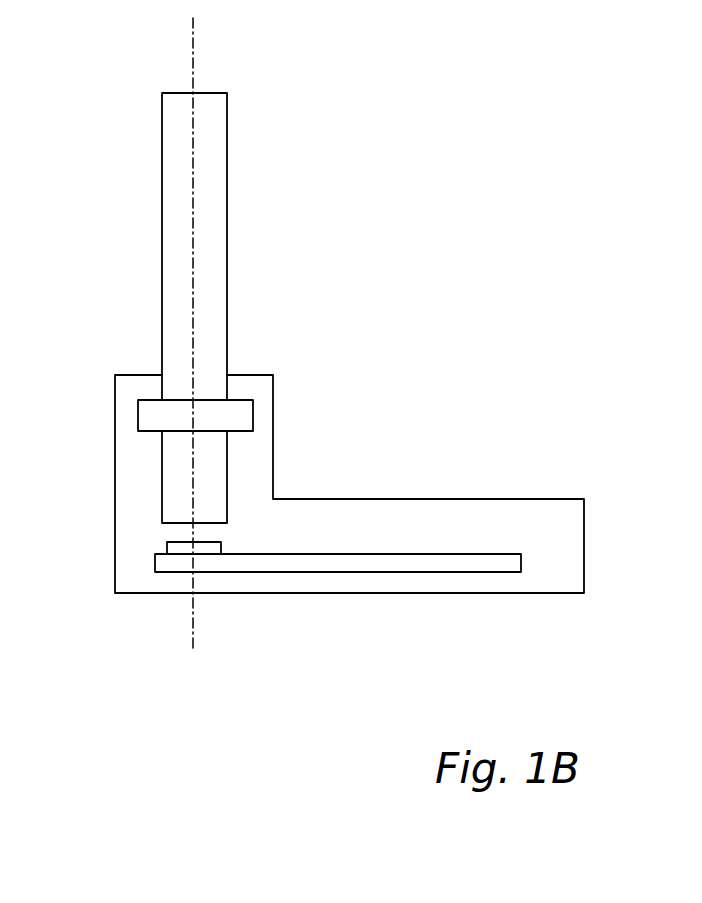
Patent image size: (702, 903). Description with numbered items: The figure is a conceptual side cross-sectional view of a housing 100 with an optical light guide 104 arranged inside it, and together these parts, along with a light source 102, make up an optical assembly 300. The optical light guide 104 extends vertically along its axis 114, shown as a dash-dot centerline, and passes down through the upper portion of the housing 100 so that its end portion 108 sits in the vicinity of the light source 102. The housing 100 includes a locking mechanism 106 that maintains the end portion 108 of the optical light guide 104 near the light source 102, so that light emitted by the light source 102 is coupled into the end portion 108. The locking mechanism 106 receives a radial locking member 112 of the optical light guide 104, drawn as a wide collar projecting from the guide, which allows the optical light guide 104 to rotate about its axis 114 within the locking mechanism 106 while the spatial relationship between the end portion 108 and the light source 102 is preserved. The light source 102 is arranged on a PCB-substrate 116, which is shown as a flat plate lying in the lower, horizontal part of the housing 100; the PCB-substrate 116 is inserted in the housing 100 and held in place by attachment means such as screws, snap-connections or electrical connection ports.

The housing 100 is at (434, 484).
The light source 102 is at (210, 551).
The optical light guide 104 is at (173, 168).
The locking mechanism 106 is at (258, 448).
The end portion 108 is at (178, 482).
The radial locking member 112 is at (160, 417).
The axis 114 is at (194, 50).
The PCB-substrate 116 is at (368, 563).
The optical assembly 300 is at (522, 303).